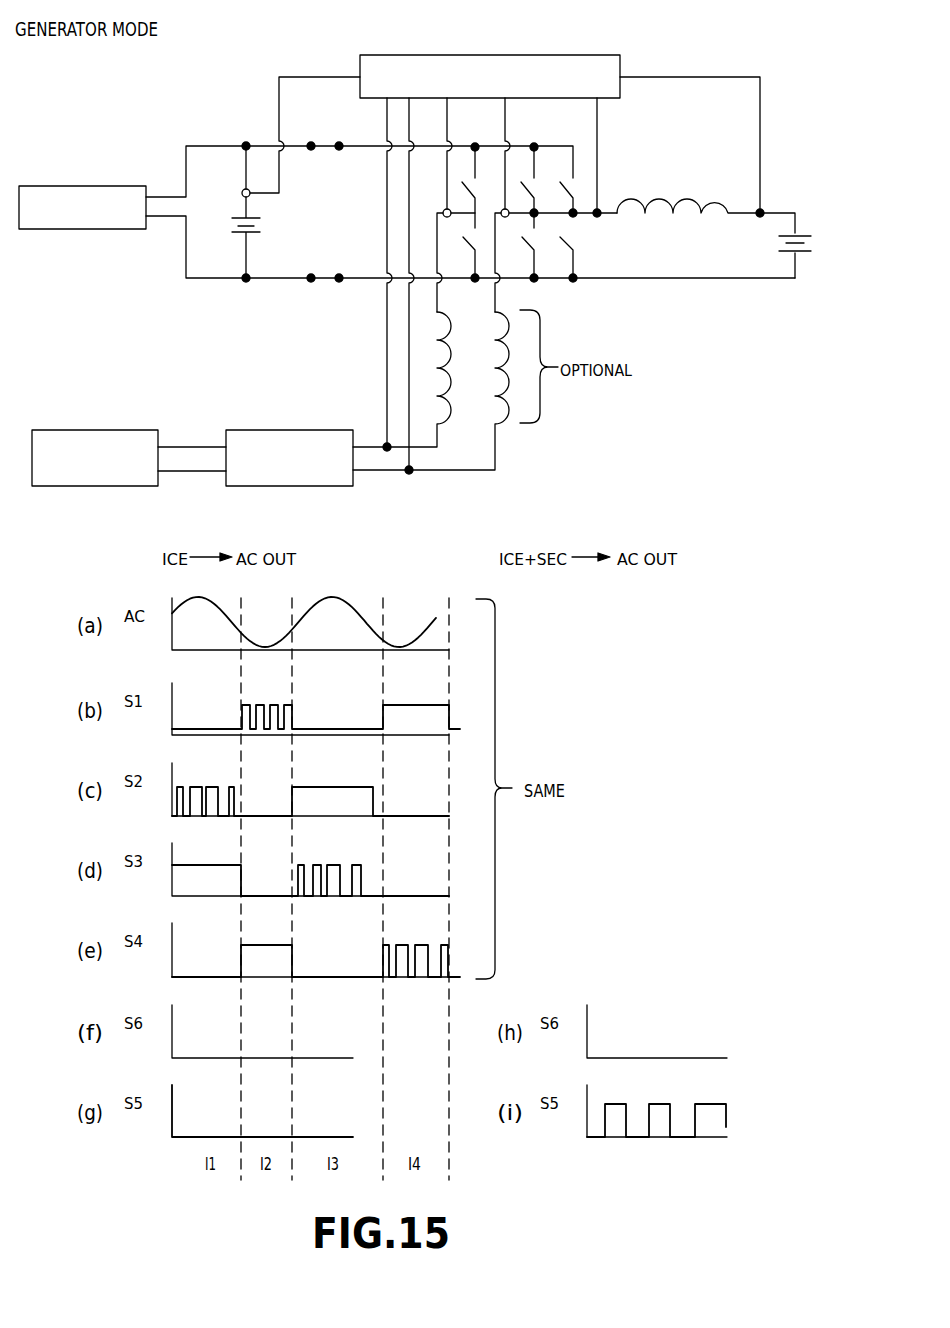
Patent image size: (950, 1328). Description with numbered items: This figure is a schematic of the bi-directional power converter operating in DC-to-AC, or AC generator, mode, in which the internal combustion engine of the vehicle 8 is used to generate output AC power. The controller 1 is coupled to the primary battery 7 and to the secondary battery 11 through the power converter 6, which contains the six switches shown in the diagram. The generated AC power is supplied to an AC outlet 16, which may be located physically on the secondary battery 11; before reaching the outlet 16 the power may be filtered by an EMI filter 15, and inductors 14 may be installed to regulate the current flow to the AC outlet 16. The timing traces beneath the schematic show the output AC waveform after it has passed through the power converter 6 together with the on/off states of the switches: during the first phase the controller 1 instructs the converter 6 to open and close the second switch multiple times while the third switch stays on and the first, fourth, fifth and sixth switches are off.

The controller 1 is at (375, 55).
The power converter 6 is at (641, 145).
The primary battery 7 is at (232, 212).
The vehicle 8 is at (80, 230).
The secondary battery 11 is at (782, 257).
The inductors 14 is at (503, 425).
The EMI filter 15 is at (287, 430).
The AC outlet 16 is at (93, 430).